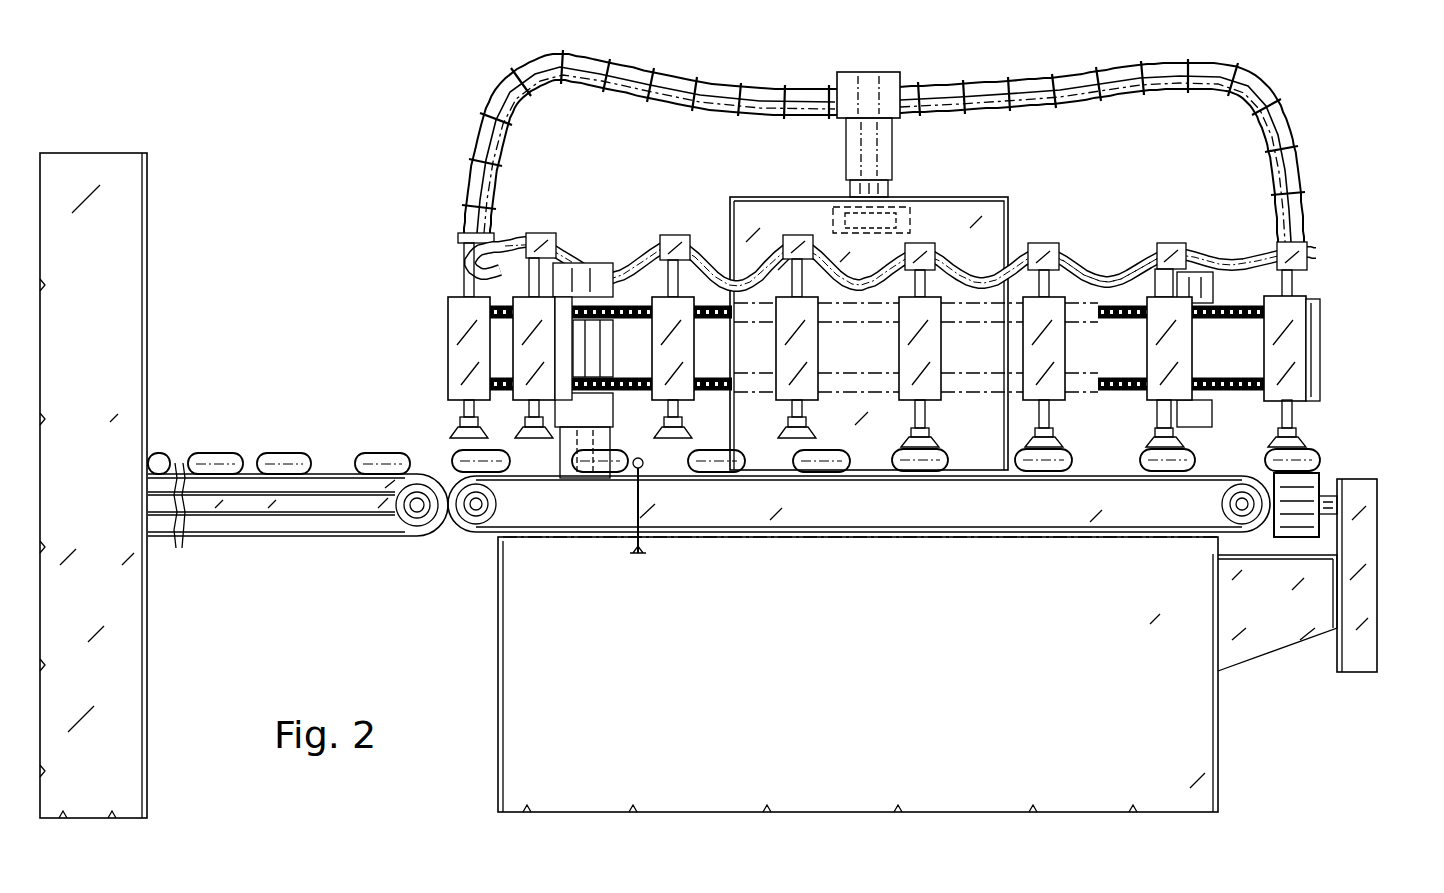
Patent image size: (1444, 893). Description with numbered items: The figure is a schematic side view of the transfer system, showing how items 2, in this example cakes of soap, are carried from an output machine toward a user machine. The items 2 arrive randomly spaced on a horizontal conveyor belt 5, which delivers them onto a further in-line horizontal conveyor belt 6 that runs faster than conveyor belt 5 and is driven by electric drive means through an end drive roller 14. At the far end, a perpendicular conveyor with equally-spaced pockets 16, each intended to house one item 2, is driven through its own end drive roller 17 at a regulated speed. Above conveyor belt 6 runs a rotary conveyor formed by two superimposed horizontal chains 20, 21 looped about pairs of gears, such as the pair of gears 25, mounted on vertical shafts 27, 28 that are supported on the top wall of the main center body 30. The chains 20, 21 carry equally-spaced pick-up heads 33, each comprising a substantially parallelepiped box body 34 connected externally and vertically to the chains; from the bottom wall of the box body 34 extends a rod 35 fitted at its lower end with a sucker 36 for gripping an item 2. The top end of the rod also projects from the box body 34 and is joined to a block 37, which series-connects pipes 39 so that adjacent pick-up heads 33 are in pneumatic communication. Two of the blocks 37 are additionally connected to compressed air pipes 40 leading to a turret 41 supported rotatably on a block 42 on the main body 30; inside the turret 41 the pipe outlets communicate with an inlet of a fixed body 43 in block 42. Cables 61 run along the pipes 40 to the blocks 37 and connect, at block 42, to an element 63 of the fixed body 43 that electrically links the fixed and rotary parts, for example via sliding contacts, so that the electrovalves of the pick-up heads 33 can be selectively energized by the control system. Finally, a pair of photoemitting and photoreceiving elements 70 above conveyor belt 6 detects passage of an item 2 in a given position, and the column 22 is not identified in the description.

The items 2 is at (155, 452).
The horizontal conveyor belt 5 is at (332, 502).
The in-line horizontal conveyor belt 6 is at (946, 486).
The end drive roller 14 is at (1215, 540).
The pockets 16 is at (1292, 512).
The end drive roller 17 is at (1330, 508).
The horizontal chain 20 is at (597, 262).
The horizontal chain 21 is at (708, 394).
The support column 22 is at (562, 461).
The pair of gears 25 is at (1107, 276).
The vertical shaft 27 is at (570, 267).
The vertical shaft 28 is at (1193, 272).
The main center body 30 is at (1210, 760).
The pick-up heads 33 is at (525, 332).
The box body 34 is at (538, 355).
The rod 35 is at (528, 410).
The sucker 36 is at (540, 433).
The block 37 is at (462, 234).
The pipes 39 is at (500, 248).
The compressed air pipes 40 is at (1034, 92).
The turret 41 is at (880, 96).
The block 42 is at (968, 216).
The fixed body 43 is at (902, 212).
The cables 61 is at (599, 84).
The element 63 is at (845, 205).
The photoemitting and photoreceiving elements 70 is at (634, 470).